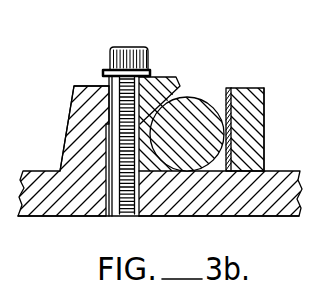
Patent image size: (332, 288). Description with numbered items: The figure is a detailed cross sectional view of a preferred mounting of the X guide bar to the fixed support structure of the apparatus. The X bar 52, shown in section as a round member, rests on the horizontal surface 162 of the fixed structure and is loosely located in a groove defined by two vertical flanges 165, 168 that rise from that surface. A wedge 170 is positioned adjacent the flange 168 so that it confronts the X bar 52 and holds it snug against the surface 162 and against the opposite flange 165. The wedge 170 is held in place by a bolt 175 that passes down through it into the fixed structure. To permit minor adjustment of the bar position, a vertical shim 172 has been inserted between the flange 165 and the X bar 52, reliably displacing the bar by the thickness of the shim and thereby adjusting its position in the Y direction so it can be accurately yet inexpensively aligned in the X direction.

The X bar 52 is at (200, 112).
The horizontal surface 162 is at (155, 174).
The vertical flange 165 is at (257, 125).
The vertical flange 168 is at (84, 109).
The wedge 170 is at (162, 80).
The vertical shim 172 is at (228, 88).
The bolt 175 is at (134, 54).